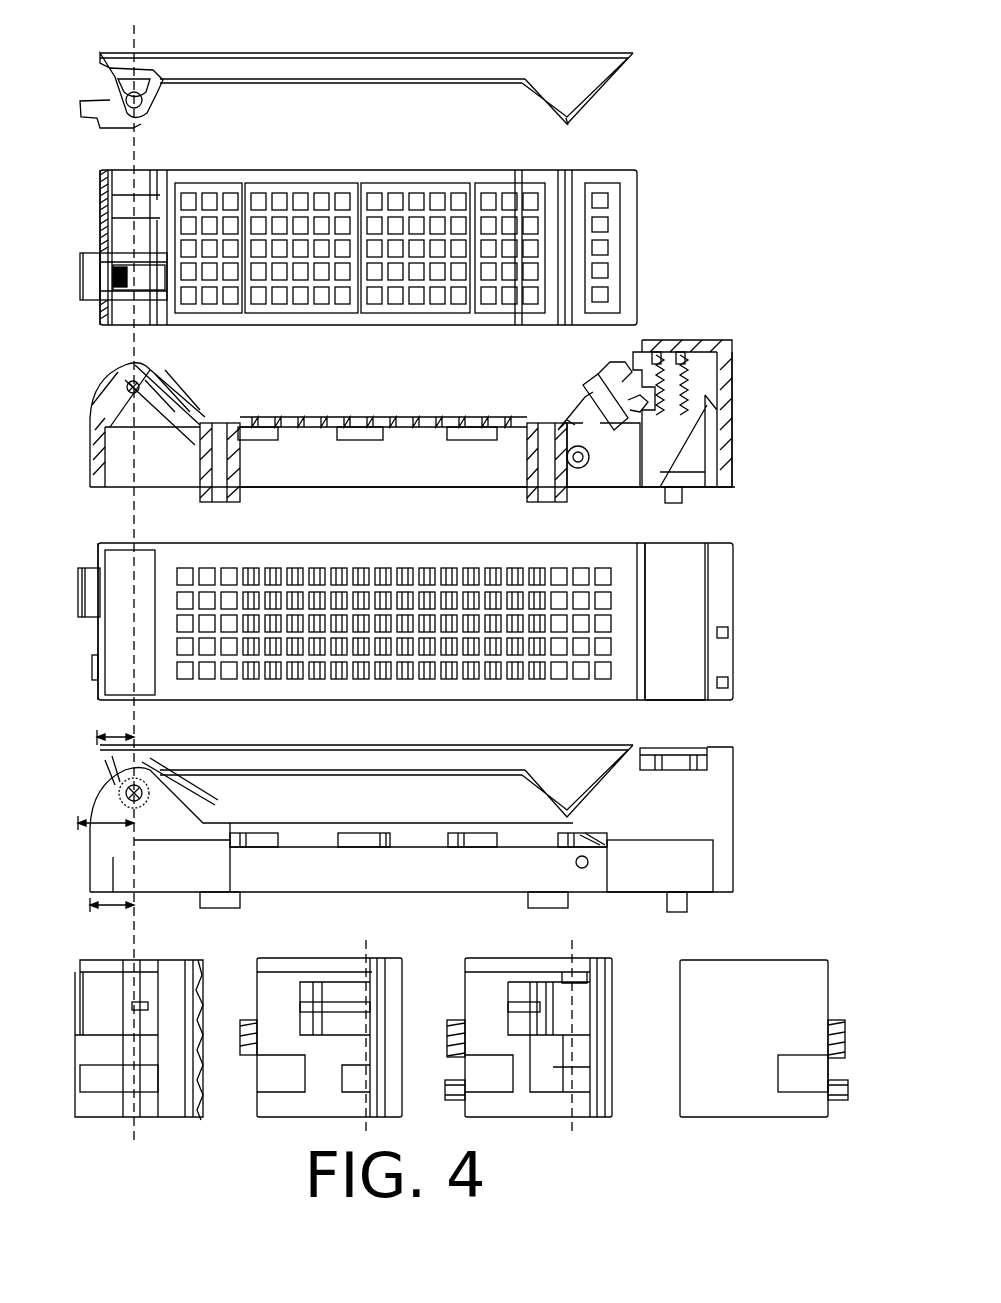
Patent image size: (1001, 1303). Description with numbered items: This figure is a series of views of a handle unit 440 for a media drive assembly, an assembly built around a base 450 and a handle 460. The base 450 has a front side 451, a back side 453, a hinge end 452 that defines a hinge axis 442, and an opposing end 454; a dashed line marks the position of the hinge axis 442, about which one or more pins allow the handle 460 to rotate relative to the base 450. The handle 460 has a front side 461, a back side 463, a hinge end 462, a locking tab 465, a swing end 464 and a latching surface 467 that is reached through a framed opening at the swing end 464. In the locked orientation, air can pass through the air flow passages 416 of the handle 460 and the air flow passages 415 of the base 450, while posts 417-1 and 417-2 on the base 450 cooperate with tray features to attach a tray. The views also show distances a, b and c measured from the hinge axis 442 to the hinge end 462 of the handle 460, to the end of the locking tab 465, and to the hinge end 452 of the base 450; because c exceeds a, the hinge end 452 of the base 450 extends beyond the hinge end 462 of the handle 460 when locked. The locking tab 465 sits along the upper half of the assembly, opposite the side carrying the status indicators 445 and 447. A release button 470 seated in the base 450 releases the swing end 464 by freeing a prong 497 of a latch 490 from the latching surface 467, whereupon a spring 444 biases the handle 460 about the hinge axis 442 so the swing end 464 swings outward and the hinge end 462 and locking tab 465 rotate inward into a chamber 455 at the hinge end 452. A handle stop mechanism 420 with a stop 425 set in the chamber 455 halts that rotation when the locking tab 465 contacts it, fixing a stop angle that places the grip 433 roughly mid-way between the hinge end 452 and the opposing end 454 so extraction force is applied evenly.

The air flow passages 415 is at (272, 414).
The air flow passages 416 is at (230, 565).
The post 417-1 is at (525, 487).
The post 417-2 is at (240, 487).
The handle stop mechanism 420 is at (488, 994).
The stop 425 is at (135, 1009).
The grip 433 is at (552, 93).
The handle unit 440 is at (731, 529).
The hinge axis 442 is at (140, 32).
The spring 444 is at (162, 790).
The status indicator 445 is at (728, 632).
The status indicator 447 is at (728, 682).
The base 450 is at (693, 326).
The front side 451 is at (393, 416).
The hinge end 452 is at (92, 442).
The back side 453 is at (385, 490).
The opposing end 454 is at (735, 406).
The chamber 455 is at (100, 999).
The handle 460 is at (648, 44).
The front side 461 is at (375, 631).
The hinge end 462 is at (102, 65).
The back side 463 is at (345, 259).
The swing end 464 is at (636, 58).
The locking tab 465 is at (80, 108).
The latching surface 467 is at (600, 252).
The release button 470 is at (660, 631).
The latch 490 is at (600, 432).
The prong 497 is at (590, 393).